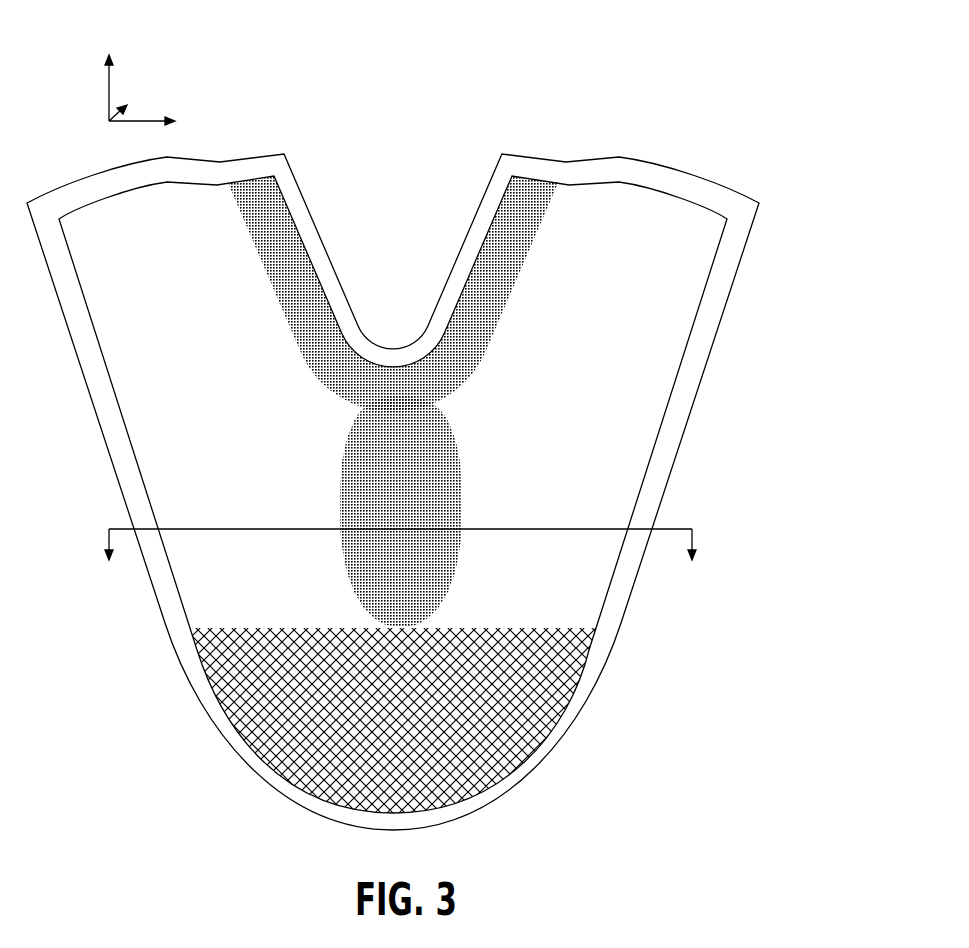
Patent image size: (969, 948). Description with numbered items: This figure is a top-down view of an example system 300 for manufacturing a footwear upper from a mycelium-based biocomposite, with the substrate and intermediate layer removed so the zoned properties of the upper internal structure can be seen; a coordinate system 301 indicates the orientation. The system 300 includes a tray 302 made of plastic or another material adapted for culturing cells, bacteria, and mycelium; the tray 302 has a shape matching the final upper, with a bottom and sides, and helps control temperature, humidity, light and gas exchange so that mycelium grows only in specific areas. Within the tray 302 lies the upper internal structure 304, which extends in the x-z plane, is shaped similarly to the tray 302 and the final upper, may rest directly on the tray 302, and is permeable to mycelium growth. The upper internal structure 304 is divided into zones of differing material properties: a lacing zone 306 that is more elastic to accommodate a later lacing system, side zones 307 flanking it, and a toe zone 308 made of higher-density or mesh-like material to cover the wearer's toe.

The system 300 is at (720, 48).
The coordinate system 301 is at (162, 89).
The tray 302 is at (726, 183).
The upper internal structure 304 is at (713, 264).
The lacing zone 306 is at (392, 388).
The side zones 307 is at (391, 447).
The toe zone 308 is at (395, 733).